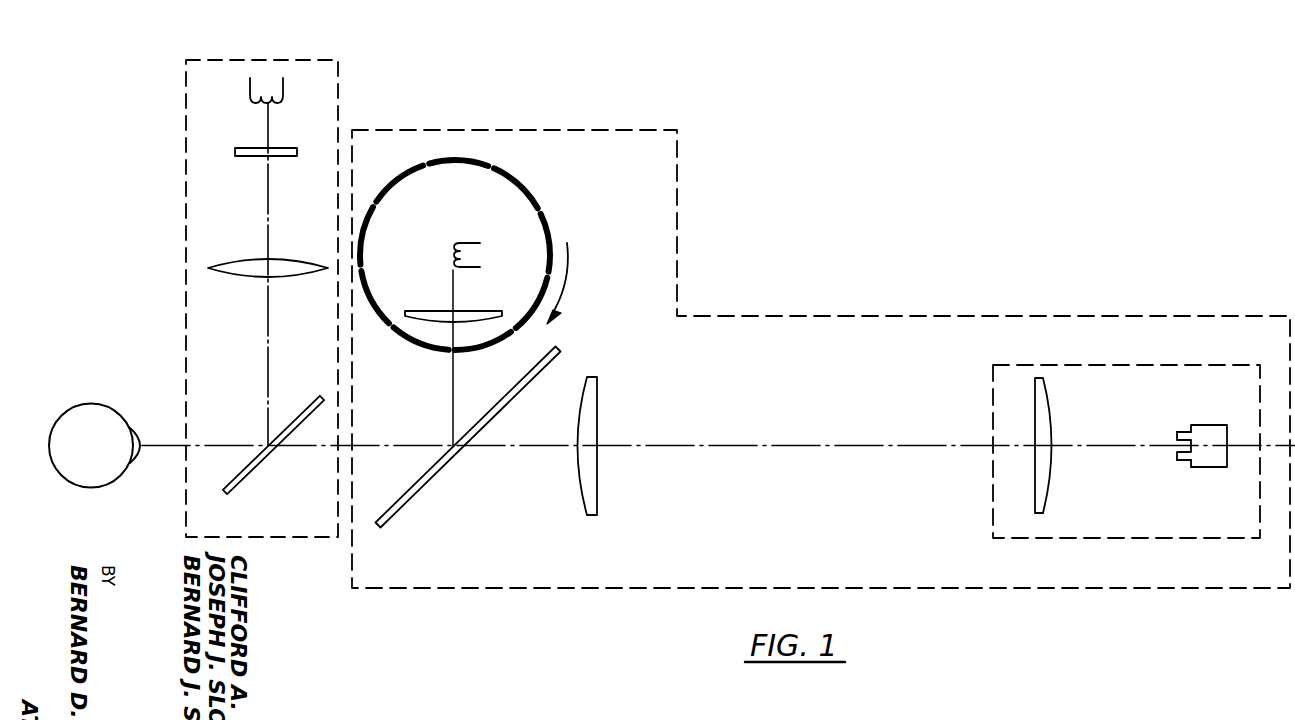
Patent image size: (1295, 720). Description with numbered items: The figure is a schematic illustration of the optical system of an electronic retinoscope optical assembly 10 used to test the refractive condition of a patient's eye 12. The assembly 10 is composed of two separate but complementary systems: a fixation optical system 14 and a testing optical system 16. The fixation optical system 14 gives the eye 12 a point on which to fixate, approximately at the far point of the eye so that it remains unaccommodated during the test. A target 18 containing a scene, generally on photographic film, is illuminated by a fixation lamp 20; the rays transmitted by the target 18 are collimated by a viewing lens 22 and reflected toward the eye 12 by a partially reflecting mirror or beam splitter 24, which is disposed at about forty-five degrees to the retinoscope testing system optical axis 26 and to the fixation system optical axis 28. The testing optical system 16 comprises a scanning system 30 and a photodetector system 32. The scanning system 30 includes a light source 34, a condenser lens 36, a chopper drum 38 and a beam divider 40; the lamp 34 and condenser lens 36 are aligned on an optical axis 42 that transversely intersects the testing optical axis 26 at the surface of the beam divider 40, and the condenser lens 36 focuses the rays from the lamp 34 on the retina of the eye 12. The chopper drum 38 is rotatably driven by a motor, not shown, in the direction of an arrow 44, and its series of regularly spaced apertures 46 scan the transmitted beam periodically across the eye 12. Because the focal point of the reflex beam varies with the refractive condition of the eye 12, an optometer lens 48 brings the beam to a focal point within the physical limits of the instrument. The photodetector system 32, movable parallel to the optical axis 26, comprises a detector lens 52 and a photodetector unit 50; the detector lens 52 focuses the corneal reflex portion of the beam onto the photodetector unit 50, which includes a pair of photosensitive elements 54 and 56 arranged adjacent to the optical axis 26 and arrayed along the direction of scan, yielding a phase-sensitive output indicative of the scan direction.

The electronic retinoscope optical assembly 10 is at (401, 62).
The eye 12 is at (113, 404).
The fixation optical system 14 is at (186, 191).
The testing optical system 16 is at (722, 316).
The target 18 is at (238, 148).
The fixation lamp 20 is at (250, 92).
The viewing lens 22 is at (210, 265).
The beam splitter 24 is at (302, 398).
The retinoscope testing system optical axis 26 is at (767, 445).
The fixation system optical axis 28 is at (268, 336).
The scanning system 30 is at (565, 216).
The photodetector system 32 is at (1032, 365).
The light source 34 is at (466, 243).
The condenser lens 36 is at (430, 310).
The chopper drum 38 is at (519, 179).
The beam divider 40 is at (527, 377).
The optical axis 42 is at (452, 413).
The arrow 44 is at (569, 284).
The apertures 46 is at (452, 353).
The optometer lens 48 is at (598, 425).
The photodetector unit 50 is at (1205, 468).
The detector lens 52 is at (1050, 403).
The photosensitive element 54 is at (1183, 461).
The photosensitive element 56 is at (1187, 432).